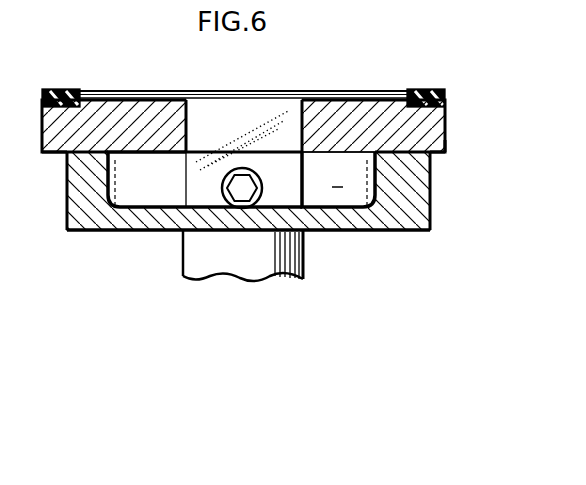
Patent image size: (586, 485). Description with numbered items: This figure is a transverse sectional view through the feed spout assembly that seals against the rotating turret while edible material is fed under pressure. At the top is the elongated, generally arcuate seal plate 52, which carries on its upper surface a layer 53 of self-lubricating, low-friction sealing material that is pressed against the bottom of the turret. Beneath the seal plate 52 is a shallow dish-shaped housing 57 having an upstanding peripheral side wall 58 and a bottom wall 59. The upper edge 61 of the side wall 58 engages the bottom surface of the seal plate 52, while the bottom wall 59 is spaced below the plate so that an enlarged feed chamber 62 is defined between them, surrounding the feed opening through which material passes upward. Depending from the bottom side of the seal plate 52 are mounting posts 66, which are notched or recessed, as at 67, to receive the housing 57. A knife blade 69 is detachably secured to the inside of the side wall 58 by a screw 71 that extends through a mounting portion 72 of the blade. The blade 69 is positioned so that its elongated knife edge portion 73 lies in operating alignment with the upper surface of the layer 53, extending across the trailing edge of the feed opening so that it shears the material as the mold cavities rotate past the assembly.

The seal plate 52 is at (437, 122).
The layer of self-lubricating sealing material 53 is at (445, 90).
The housing 57 is at (420, 220).
The side wall 58 is at (415, 193).
The bottom wall 59 is at (348, 221).
The upper edge 61 is at (415, 150).
The feed chamber 62 is at (338, 179).
The mounting posts 66 is at (303, 267).
The notch 67 is at (218, 218).
The knife blade 69 is at (289, 86).
The screw 71 is at (238, 184).
The mounting portion 72 is at (197, 169).
The knife edge portion 73 is at (363, 90).